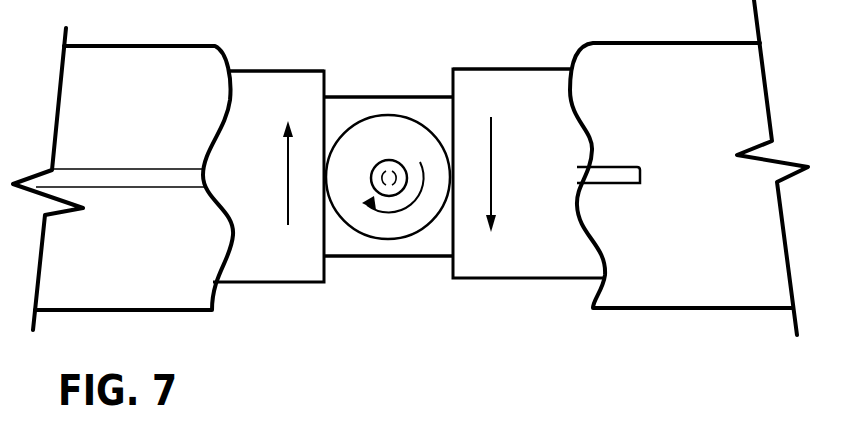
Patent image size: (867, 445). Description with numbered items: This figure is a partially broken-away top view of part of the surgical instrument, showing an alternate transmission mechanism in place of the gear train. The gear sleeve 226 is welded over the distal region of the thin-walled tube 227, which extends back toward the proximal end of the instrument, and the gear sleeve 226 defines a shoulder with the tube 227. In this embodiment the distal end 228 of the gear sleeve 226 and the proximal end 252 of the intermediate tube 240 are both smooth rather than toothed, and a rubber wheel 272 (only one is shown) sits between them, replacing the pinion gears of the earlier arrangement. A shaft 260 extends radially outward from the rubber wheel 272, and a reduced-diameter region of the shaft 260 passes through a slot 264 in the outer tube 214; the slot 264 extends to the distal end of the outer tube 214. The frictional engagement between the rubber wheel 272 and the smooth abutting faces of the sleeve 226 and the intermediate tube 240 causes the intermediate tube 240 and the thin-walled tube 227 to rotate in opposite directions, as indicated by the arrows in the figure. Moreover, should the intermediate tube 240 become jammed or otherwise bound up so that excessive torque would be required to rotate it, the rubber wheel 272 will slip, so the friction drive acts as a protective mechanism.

The outer tube 214 is at (144, 255).
The gear sleeve 226 is at (224, 172).
The thin-walled tube 227 is at (355, 245).
The distal end of gear sleeve 228 is at (315, 80).
The intermediate tube 240 is at (517, 157).
The proximal end of intermediate tube 252 is at (466, 82).
The shaft 260 is at (388, 177).
The slot 264 is at (118, 180).
The rubber wheel 272 is at (409, 151).